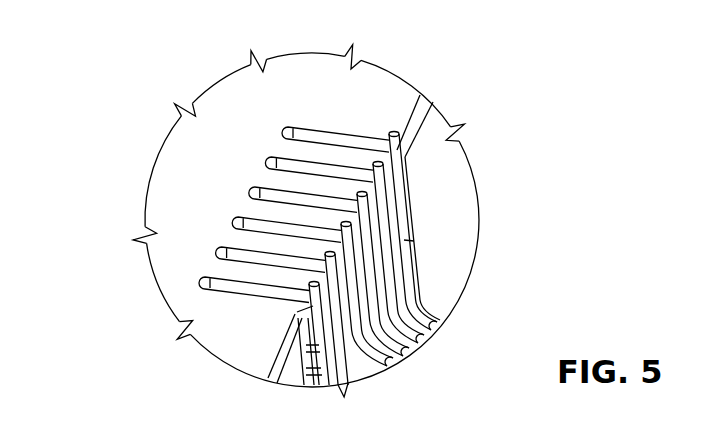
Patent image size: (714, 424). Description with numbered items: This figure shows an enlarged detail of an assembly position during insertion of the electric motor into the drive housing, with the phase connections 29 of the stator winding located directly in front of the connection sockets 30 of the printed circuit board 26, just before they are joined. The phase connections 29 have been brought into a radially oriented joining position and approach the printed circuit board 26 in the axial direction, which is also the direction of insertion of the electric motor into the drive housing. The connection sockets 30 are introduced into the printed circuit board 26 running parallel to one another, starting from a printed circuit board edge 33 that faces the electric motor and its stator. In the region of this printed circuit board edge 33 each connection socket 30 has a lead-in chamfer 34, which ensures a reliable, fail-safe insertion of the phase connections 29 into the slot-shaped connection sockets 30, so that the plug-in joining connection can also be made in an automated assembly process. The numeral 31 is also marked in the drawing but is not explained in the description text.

The printed circuit board 26 is at (180, 194).
The phase connections 29 is at (405, 198).
The connection sockets 30 is at (340, 130).
The terminal contact portion 31 is at (238, 6).
The printed circuit board edge 33 is at (413, 118).
The lead-in chamfer 34 is at (297, 313).